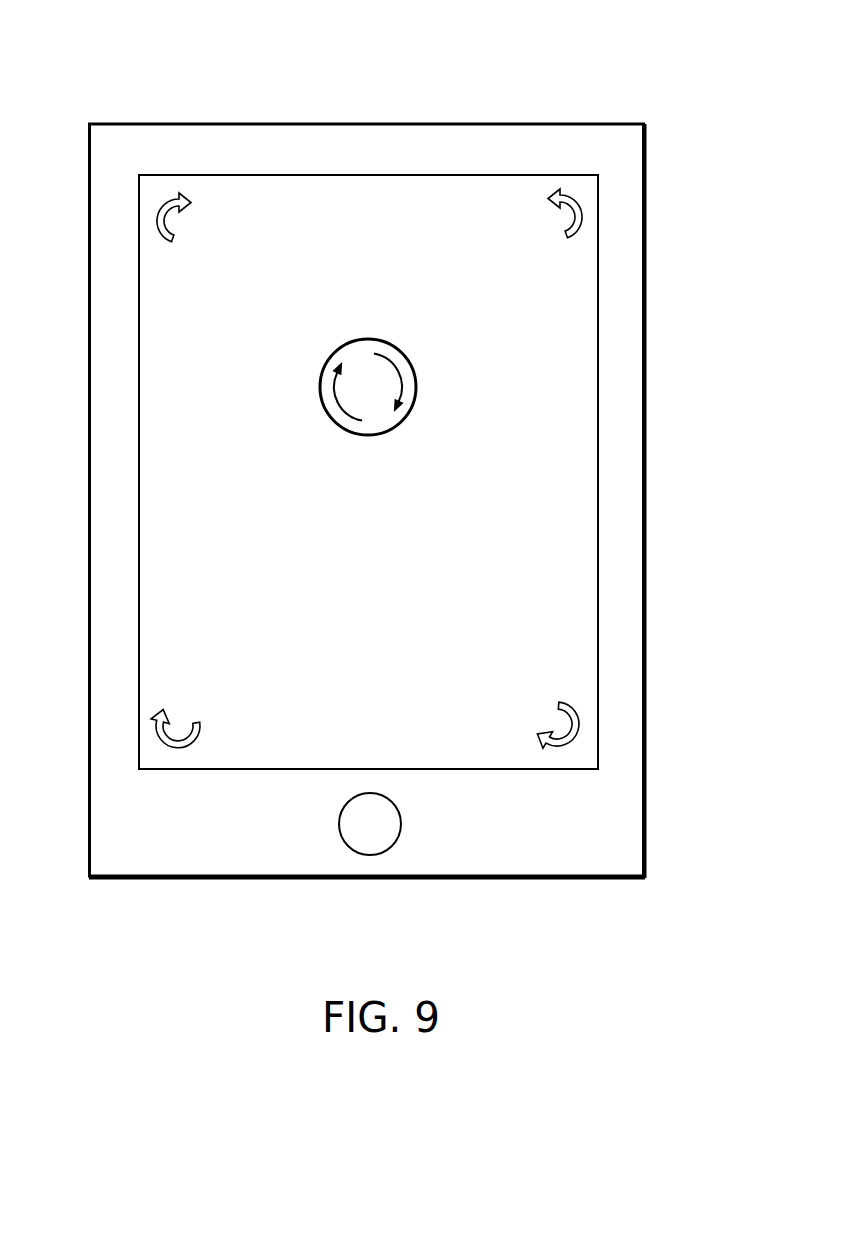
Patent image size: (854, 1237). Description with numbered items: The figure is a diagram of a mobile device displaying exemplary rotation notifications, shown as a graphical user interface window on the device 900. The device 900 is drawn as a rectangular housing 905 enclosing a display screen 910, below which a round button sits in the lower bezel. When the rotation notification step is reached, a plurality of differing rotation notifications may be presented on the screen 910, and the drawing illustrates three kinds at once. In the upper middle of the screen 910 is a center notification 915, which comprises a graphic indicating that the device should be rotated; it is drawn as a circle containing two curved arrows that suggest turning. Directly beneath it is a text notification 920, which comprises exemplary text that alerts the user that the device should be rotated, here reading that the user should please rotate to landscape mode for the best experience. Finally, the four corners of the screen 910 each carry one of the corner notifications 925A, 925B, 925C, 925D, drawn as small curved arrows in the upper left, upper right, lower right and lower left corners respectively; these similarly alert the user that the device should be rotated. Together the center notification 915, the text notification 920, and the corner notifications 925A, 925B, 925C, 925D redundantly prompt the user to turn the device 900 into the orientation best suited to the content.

The mobile device 900 is at (398, 457).
The device housing 905 is at (297, 123).
The display screen 910 is at (466, 173).
The center notification 915 is at (377, 338).
The text notification 920 is at (396, 509).
The corner notification 925A is at (176, 244).
The corner notification 925B is at (565, 240).
The corner notification 925C is at (543, 731).
The corner notification 925D is at (198, 724).